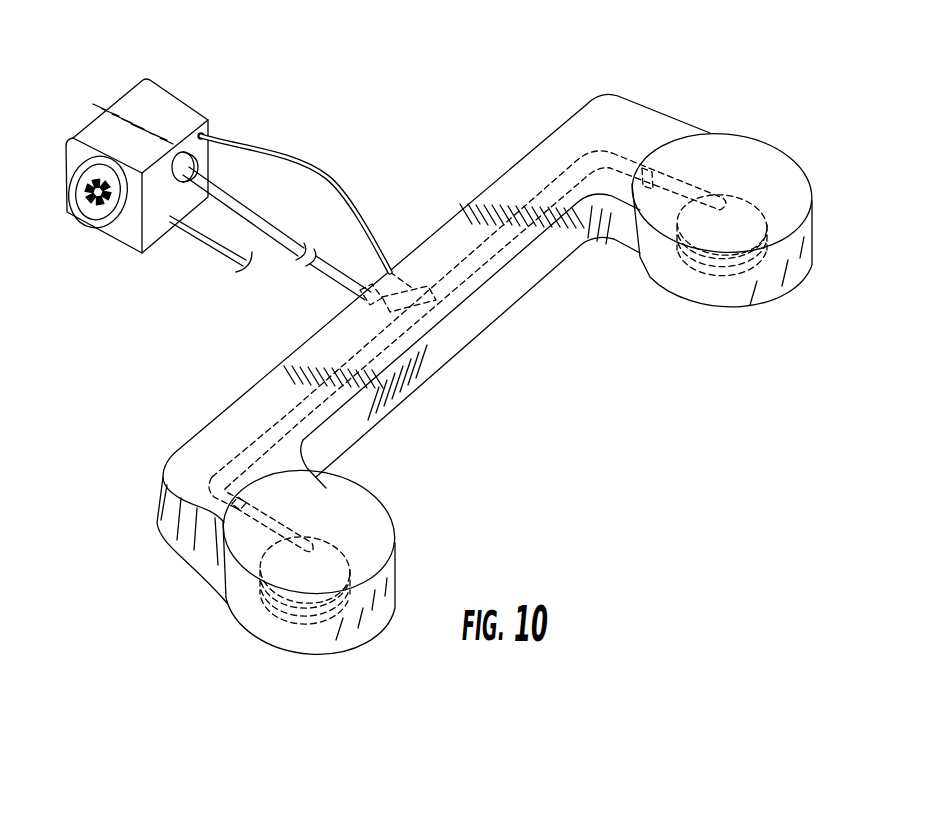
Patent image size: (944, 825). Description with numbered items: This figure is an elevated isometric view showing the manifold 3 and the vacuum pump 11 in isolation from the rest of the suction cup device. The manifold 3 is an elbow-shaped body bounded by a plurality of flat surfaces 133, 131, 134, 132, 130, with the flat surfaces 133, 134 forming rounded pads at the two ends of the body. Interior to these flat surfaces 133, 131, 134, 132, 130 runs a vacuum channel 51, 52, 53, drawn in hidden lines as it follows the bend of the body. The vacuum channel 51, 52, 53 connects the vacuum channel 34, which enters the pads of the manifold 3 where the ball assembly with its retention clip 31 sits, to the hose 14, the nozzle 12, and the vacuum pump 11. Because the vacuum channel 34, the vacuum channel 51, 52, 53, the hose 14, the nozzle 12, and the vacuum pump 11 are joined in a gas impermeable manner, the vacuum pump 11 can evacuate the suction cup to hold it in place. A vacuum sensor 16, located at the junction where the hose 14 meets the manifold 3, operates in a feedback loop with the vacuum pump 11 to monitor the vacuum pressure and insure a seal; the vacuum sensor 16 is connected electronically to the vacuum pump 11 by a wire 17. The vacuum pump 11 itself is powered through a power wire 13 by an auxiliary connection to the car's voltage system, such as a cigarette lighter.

The manifold 3 is at (360, 566).
The vacuum pump 11 is at (95, 115).
The nozzle 12 is at (180, 152).
The power wire 13 is at (203, 252).
The hose 14 is at (257, 218).
The vacuum sensor 16 is at (432, 282).
The wire 17 is at (323, 172).
The retention clip 31 is at (293, 580).
The vacuum channel 34 is at (316, 546).
The vacuum channel 51 is at (484, 265).
The vacuum channel 52 is at (368, 298).
The vacuum channel 53 is at (312, 478).
The flat surface 130 is at (237, 430).
The flat surface 131 is at (157, 492).
The flat surface 132 is at (447, 337).
The flat surface 133 is at (323, 638).
The flat surface 134 is at (717, 290).